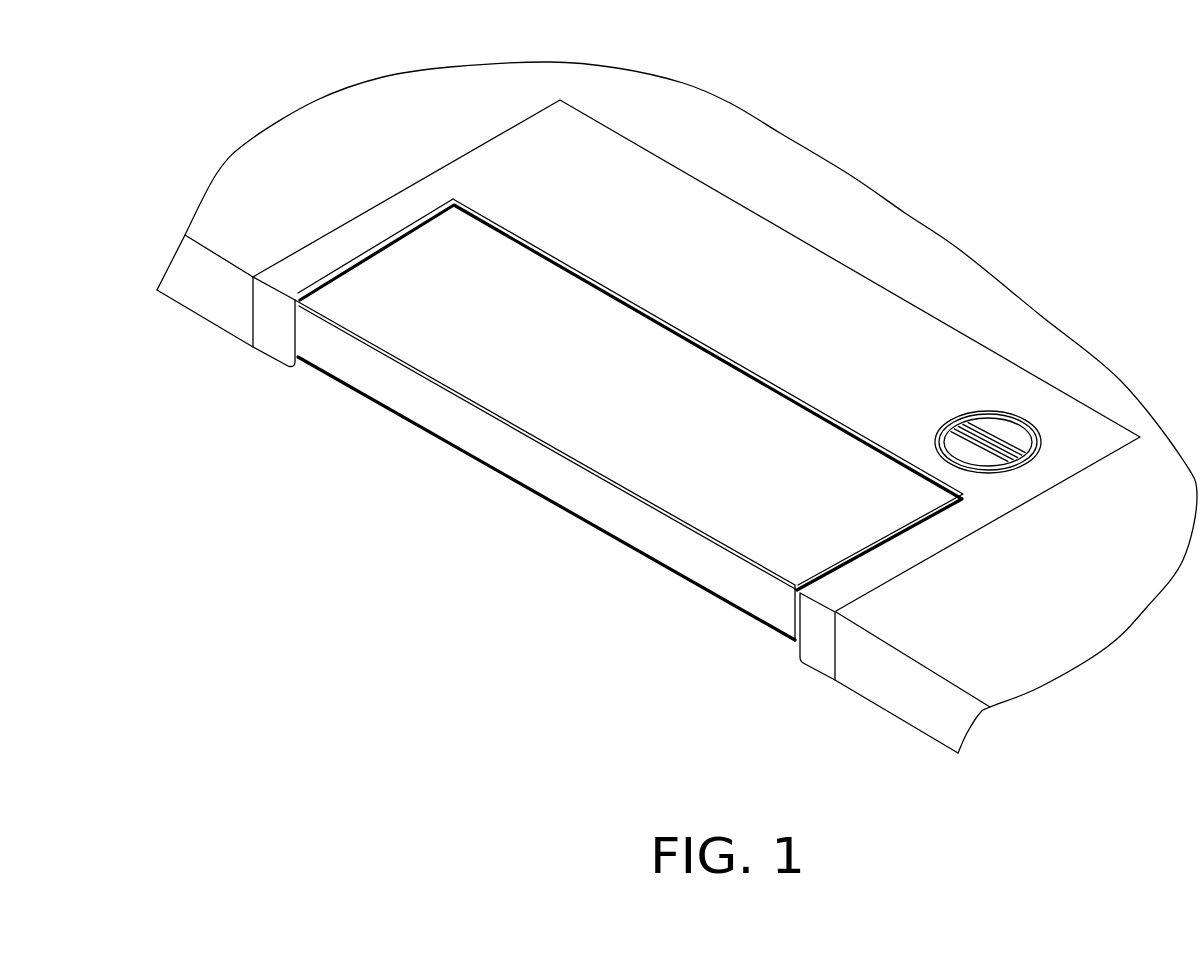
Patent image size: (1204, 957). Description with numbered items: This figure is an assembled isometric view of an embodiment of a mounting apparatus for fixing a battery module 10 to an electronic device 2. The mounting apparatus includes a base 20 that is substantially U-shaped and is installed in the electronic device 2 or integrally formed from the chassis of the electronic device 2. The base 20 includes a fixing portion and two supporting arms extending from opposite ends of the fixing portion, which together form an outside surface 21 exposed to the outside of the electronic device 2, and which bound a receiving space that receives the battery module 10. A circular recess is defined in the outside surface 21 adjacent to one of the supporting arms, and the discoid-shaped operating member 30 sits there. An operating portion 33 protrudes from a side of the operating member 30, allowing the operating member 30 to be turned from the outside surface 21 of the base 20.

The electronic device 2 is at (310, 150).
The base 20 is at (268, 377).
The outside surface 21 is at (830, 297).
The battery module 10 is at (643, 457).
The operating member 30 is at (1010, 432).
The operating portion 33 is at (987, 430).